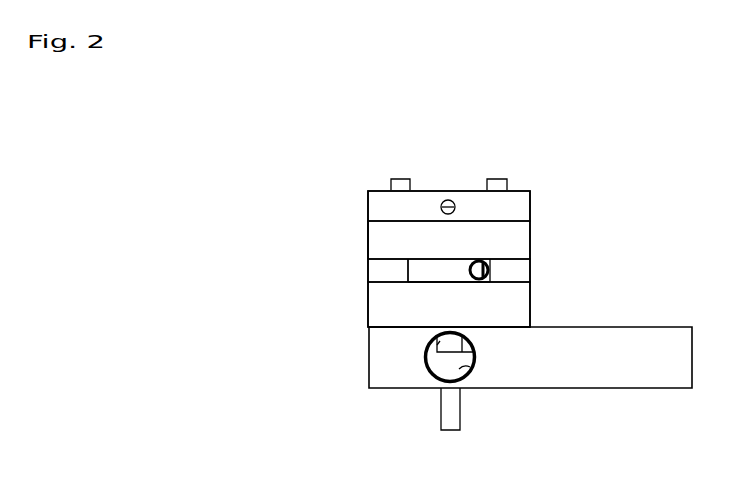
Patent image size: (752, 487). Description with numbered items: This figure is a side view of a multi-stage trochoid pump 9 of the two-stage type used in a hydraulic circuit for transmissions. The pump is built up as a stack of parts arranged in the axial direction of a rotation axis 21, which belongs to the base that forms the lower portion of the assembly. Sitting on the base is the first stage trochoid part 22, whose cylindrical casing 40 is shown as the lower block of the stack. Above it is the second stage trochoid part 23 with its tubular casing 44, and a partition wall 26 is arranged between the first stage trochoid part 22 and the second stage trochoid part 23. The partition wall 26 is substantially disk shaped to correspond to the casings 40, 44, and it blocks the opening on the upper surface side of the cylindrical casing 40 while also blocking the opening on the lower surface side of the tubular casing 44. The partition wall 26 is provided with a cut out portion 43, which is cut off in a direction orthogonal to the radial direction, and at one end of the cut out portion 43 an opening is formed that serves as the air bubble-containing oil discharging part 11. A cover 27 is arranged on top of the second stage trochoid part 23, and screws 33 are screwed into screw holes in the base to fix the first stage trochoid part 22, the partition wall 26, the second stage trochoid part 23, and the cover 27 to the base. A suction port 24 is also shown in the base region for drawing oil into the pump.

The multi-stage trochoid pump 9 is at (537, 178).
The cover 27 is at (522, 205).
The screws 33 is at (403, 178).
The second stage trochoid part 23 is at (522, 239).
The tubular casing 44 is at (368, 239).
The partition wall 26 is at (522, 269).
The cut out portion 43 is at (423, 270).
The air bubble-containing oil discharging part 11 is at (481, 282).
The cylindrical casing 40 is at (518, 295).
The first stage trochoid part 22 is at (522, 311).
The suction port 24 is at (465, 380).
The rotation axis 21 is at (442, 414).